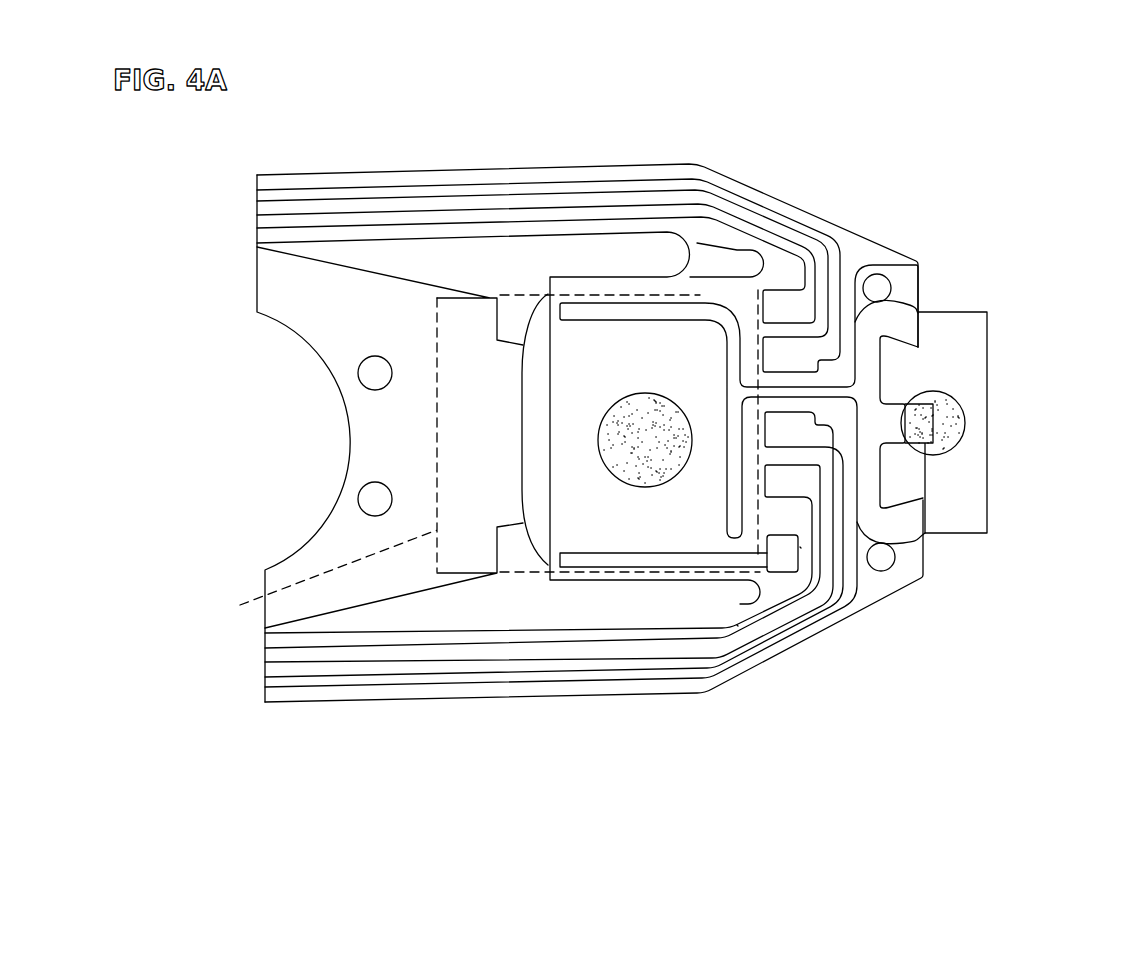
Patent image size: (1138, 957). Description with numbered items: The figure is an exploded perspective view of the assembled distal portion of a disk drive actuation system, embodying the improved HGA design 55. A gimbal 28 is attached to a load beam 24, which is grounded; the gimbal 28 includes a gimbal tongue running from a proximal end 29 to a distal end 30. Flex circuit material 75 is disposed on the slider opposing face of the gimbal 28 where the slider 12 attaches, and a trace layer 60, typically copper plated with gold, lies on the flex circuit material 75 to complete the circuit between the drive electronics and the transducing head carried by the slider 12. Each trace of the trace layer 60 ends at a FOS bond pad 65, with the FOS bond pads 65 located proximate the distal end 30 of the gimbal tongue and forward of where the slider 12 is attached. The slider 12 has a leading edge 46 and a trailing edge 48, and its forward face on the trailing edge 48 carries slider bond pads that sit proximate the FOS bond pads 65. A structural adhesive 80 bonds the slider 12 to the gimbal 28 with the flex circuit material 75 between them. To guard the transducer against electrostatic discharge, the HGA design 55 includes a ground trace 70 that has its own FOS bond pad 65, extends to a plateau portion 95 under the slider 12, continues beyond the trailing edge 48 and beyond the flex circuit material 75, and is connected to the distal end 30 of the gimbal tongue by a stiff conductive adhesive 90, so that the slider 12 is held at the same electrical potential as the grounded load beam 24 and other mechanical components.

The slider 12 is at (770, 243).
The load beam 24 is at (385, 298).
The gimbal 28 is at (737, 625).
The proximal end of gimbal tongue 29 is at (518, 382).
The distal end of gimbal tongue 30 is at (995, 355).
The leading edge 46 is at (240, 605).
The trailing edge 48 is at (800, 547).
The improved HGA design 55 is at (1048, 180).
The trace layer 60 is at (553, 217).
The FOS bond pad 65 is at (778, 316).
The ground trace 70 is at (907, 290).
The flex circuit material 75 is at (858, 238).
The structural adhesive 80 is at (645, 492).
The conductive adhesive 90 is at (950, 450).
The plateau portion 95 is at (665, 310).